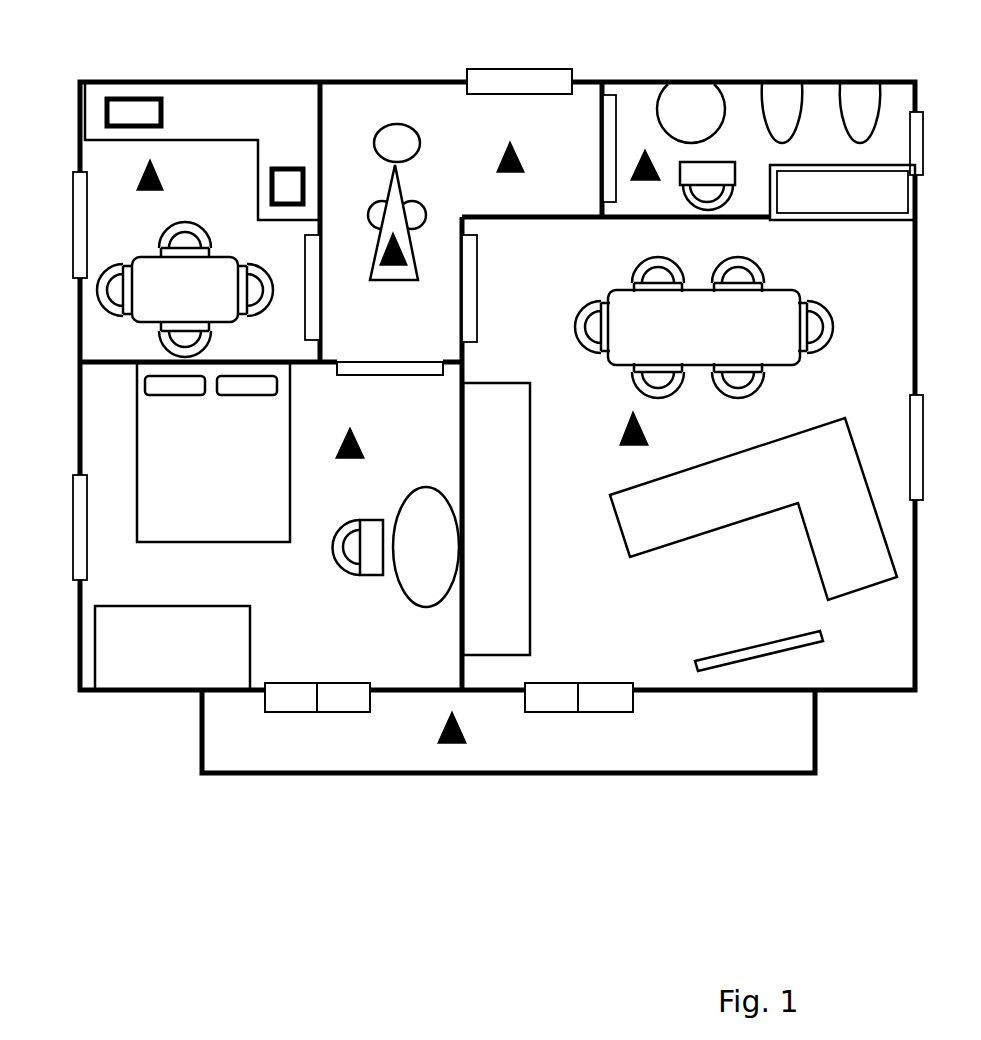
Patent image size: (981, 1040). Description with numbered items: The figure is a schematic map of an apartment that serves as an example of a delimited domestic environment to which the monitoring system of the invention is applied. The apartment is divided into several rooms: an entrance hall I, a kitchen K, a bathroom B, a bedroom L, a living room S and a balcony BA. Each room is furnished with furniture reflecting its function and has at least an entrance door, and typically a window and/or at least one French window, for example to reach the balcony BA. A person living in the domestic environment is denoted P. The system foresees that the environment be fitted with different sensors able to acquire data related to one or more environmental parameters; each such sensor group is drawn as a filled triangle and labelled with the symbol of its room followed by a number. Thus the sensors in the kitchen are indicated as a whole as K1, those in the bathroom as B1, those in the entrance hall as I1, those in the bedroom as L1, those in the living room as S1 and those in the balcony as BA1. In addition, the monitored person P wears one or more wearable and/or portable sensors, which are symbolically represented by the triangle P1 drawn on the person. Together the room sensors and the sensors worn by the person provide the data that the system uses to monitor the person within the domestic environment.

The kitchen K is at (105, 163).
The kitchen sensors K1 is at (163, 180).
The entrance hall I is at (452, 100).
The entrance hall sensors I1 is at (516, 152).
The person P is at (403, 183).
The wearable and/or portable sensors P1 is at (393, 263).
The bathroom B is at (740, 110).
The bathroom sensors B1 is at (645, 148).
The bedroom L is at (105, 423).
The bedroom sensors L1 is at (358, 440).
The living room S is at (848, 650).
The living room sensors S1 is at (626, 428).
The balcony BA is at (575, 762).
The balcony sensors BA1 is at (440, 728).